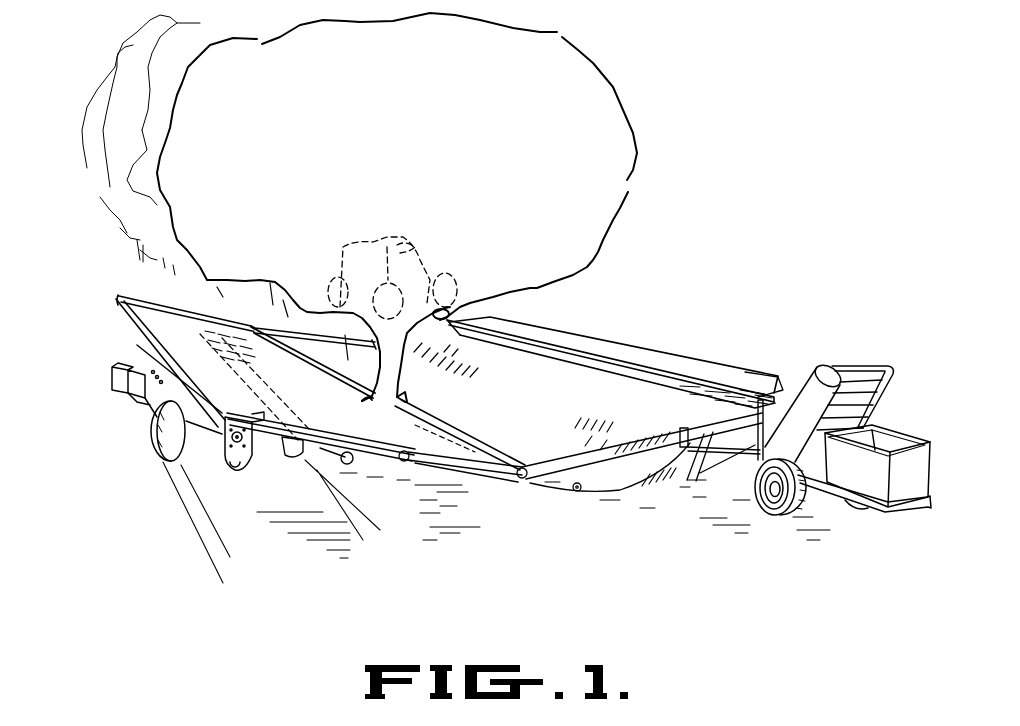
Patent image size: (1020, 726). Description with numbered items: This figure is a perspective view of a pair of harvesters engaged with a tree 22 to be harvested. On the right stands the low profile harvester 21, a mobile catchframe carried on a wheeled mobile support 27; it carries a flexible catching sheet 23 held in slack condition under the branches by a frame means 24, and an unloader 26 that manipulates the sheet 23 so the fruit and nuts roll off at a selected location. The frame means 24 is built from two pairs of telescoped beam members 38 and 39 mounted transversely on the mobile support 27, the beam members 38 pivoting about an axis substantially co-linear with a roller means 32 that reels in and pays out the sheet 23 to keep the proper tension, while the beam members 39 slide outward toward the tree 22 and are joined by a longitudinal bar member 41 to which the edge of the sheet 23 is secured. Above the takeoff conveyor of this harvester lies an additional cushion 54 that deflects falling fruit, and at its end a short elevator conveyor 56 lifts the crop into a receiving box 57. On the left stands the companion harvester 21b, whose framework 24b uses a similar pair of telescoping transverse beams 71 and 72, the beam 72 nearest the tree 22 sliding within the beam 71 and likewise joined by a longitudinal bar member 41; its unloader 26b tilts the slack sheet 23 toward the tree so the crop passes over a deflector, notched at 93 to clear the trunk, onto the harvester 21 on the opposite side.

The low profile harvester 21 is at (642, 303).
The harvester 21b is at (121, 280).
The tree 22 is at (596, 79).
The flexible catching sheet 23 is at (193, 348).
The frame means 24 is at (667, 460).
The framework 24b is at (386, 460).
The unloader 26 is at (752, 450).
The unloader 26b is at (330, 458).
The mobile support 27 is at (195, 464).
The roller means 32 is at (215, 442).
The beam member 38 is at (704, 437).
The beam member 39 is at (612, 462).
The longitudinal bar member 41 is at (518, 477).
The cushion 54 is at (747, 390).
The elevator conveyor 56 is at (860, 363).
The receiving box 57 is at (897, 433).
The transverse beam 71 is at (258, 414).
The transverse beam 72 is at (457, 457).
The notch 93 is at (365, 393).